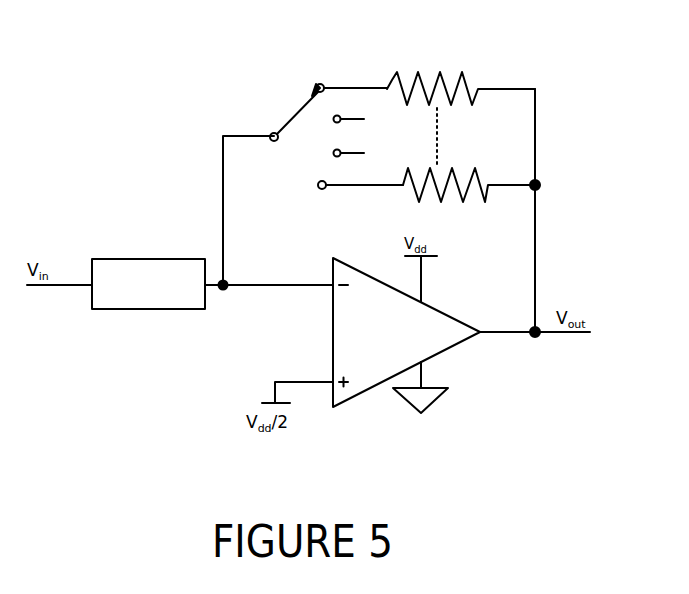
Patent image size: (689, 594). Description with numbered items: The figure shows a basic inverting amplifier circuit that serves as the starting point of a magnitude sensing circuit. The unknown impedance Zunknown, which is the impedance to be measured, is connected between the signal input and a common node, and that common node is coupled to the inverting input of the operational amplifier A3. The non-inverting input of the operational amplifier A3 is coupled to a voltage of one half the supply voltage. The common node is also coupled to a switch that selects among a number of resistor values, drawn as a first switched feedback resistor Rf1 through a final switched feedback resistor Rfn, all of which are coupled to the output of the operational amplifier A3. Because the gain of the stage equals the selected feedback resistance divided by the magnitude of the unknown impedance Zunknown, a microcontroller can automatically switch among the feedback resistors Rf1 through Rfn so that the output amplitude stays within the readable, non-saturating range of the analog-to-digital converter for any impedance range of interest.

The unknown impedance Zunknown is at (180, 284).
The switched feedback resistor Rf1 is at (461, 70).
The switched feedback resistor Rfn is at (469, 203).
The operational amplifier A3 is at (406, 332).